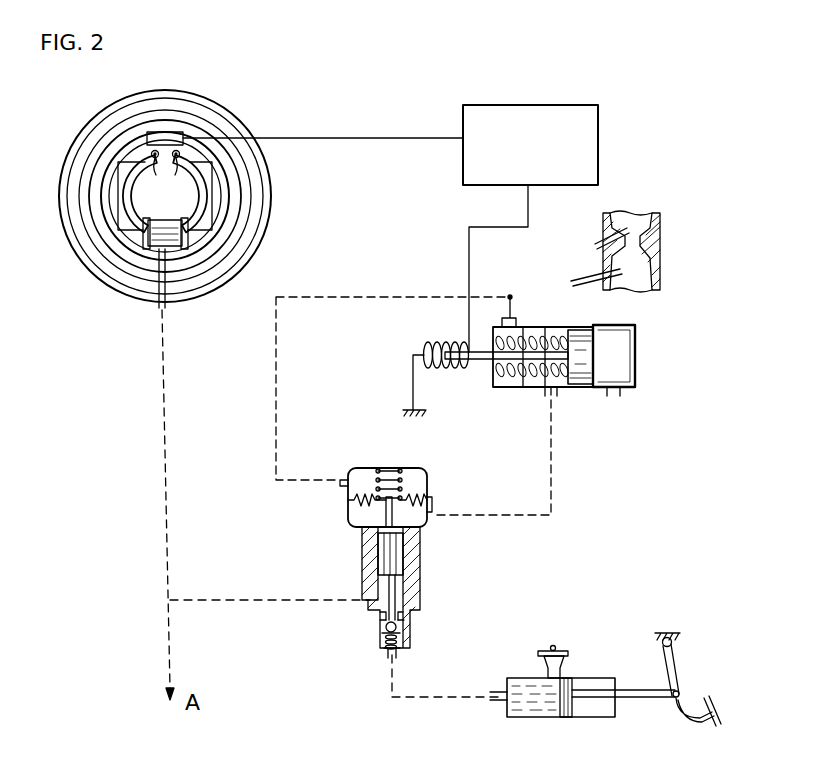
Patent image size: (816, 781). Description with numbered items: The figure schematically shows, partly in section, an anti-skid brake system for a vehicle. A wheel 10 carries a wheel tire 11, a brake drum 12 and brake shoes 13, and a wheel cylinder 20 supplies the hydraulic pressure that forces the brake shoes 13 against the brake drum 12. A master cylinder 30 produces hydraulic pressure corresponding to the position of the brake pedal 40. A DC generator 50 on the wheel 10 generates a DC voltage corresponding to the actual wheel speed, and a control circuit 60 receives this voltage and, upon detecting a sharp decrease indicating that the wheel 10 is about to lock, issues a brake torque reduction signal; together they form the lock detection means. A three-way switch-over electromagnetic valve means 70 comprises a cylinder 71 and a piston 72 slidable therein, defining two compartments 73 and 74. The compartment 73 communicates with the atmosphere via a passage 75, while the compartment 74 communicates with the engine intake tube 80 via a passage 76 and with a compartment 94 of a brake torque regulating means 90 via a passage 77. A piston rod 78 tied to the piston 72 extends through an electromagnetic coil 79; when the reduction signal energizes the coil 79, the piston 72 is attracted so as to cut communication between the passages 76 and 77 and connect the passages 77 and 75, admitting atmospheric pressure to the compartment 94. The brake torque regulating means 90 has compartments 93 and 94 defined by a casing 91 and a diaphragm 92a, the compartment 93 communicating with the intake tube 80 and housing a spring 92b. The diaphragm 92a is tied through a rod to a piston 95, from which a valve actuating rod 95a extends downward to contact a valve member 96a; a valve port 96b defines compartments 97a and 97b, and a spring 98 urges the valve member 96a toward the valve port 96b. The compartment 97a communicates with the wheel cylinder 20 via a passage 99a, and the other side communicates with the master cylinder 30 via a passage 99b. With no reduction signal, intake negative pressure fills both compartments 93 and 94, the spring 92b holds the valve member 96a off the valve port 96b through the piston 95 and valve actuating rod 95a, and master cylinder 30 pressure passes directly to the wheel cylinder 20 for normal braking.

The wheel 10 is at (232, 112).
The wheel tire 11 is at (243, 189).
The brake drum 12 is at (236, 208).
The brake shoes 13 is at (212, 215).
The wheel cylinder 20 is at (168, 255).
The DC generator 50 is at (170, 132).
The control circuit 60 is at (536, 106).
The three-way switch-over electromagnetic valve means 70 is at (546, 353).
The cylinder 71 is at (636, 336).
The piston 72 is at (580, 331).
The compartment 73 is at (612, 355).
The compartment 74 is at (558, 330).
The passage 75 is at (615, 395).
The passage 76 is at (513, 318).
The passage 77 is at (550, 395).
The piston rod 78 is at (486, 362).
The electromagnetic coil 79 is at (432, 345).
The intake tube 80 is at (662, 238).
The brake torque regulating means 90 is at (398, 566).
The casing 91 is at (430, 478).
The diaphragm 92a is at (374, 495).
The spring 92b is at (396, 468).
The compartment 93 is at (343, 484).
The compartment 94 is at (360, 505).
The piston 95 is at (393, 553).
The valve actuating rod 95a is at (392, 590).
The valve member 96a is at (408, 626).
The valve port 96b is at (384, 630).
The compartment 97a is at (377, 596).
The compartment 97b is at (388, 652).
The spring 98 is at (404, 634).
The passage 99a is at (372, 616).
The passage 99b is at (392, 656).
The master cylinder 30 is at (598, 678).
The brake pedal 40 is at (675, 656).